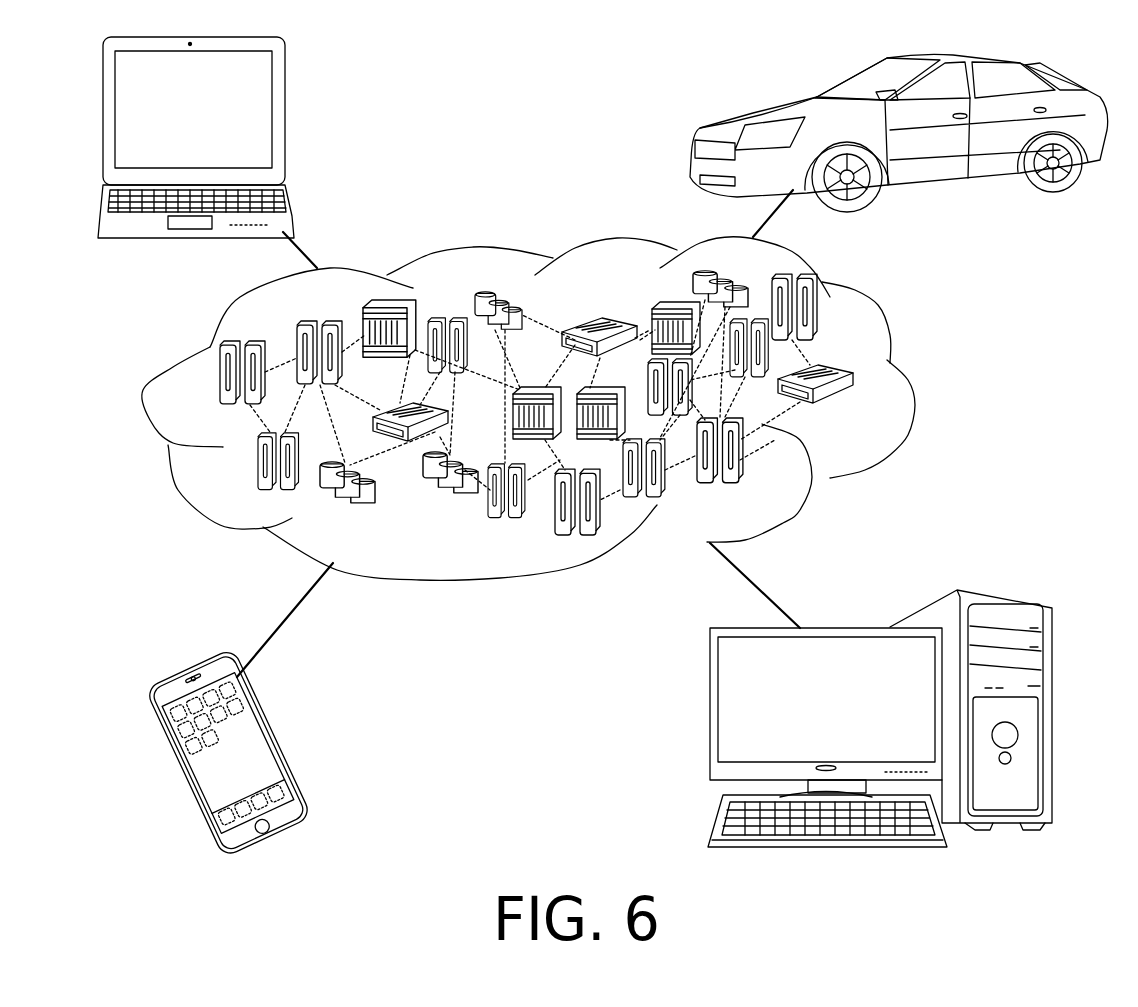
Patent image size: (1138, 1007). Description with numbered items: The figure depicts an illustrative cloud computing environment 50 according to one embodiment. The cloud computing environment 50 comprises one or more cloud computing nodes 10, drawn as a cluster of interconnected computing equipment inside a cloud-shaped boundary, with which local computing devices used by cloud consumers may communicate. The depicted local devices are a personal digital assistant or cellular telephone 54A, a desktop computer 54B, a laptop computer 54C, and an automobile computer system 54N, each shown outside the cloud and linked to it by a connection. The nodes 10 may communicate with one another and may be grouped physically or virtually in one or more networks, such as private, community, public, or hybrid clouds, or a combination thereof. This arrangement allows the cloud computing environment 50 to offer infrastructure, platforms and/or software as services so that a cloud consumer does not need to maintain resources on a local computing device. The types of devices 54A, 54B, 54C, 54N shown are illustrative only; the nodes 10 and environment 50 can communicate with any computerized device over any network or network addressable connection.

The cloud computing node 10 is at (858, 405).
The cloud computing environment 50 is at (562, 409).
The personal digital assistant (PDA) or cellular telephone 54A is at (253, 741).
The desktop computer 54B is at (932, 600).
The laptop computer 54C is at (260, 131).
The automobile computer system 54N is at (694, 141).